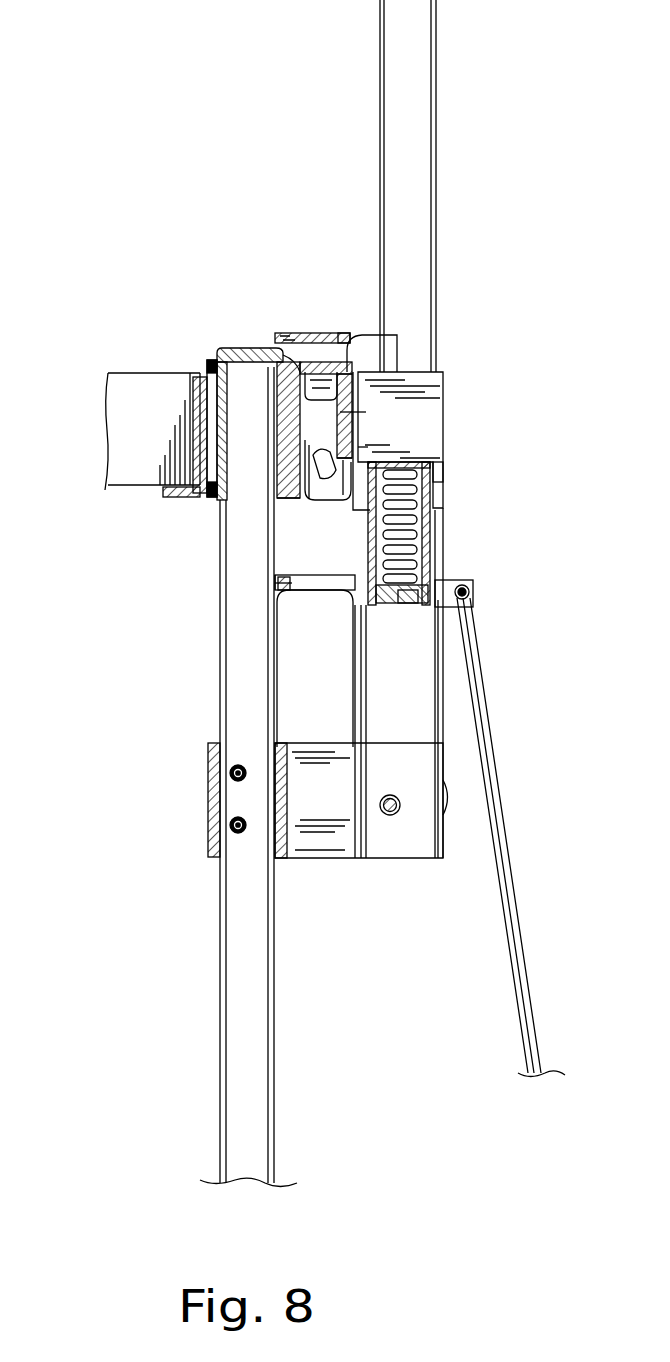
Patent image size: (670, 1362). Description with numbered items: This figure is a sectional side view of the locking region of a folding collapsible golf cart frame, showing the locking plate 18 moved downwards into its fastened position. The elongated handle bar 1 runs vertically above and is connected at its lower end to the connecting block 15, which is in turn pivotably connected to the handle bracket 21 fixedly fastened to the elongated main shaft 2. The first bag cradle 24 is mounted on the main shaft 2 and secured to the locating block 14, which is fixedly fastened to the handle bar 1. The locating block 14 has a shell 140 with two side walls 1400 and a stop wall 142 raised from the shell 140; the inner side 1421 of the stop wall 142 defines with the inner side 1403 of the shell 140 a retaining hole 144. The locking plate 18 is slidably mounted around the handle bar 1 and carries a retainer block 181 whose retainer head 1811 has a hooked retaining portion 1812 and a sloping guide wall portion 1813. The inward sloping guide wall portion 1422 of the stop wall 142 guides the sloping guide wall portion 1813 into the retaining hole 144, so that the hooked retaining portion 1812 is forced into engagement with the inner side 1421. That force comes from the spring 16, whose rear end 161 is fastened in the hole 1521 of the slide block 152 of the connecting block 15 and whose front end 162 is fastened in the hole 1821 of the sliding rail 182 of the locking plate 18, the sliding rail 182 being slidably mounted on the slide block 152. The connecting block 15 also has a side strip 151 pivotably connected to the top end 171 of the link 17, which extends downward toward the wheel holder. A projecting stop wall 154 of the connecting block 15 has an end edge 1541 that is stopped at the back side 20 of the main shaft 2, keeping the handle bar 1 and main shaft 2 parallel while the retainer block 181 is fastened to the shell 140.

The handle bar 1 is at (450, 118).
The main shaft 2 is at (287, 992).
The locating block 14 is at (307, 333).
The shell 140 is at (330, 347).
The stop wall 142 is at (370, 361).
The retaining hole 144 is at (347, 333).
The inner side of the shell 1403 is at (303, 333).
The inner side of the stop wall 1421 is at (245, 350).
The sloping guide wall portion 1422 is at (367, 415).
The first bag cradle 24 is at (138, 372).
The sloping guide wall portion 1813 is at (207, 499).
The retainer block 181 is at (310, 472).
The side walls 1400 is at (306, 505).
The retainer head 1811 is at (343, 495).
The locking plate 18 is at (456, 422).
The hooked retaining portion 1812 is at (360, 447).
The front end 162 is at (440, 468).
The sliding rail 182 is at (435, 537).
The spring 16 is at (433, 518).
The hole 1821 is at (435, 562).
The rear end 161 is at (407, 605).
The side strip 151 is at (475, 585).
The top end 171 is at (471, 607).
The connecting block 15 is at (455, 677).
The link 17 is at (510, 762).
The projecting stop wall 154 is at (300, 590).
The hole 1521 is at (367, 602).
The end edge 1541 is at (277, 583).
The back side 20 is at (277, 577).
The slide block 152 is at (380, 607).
The handle bracket 21 is at (301, 868).